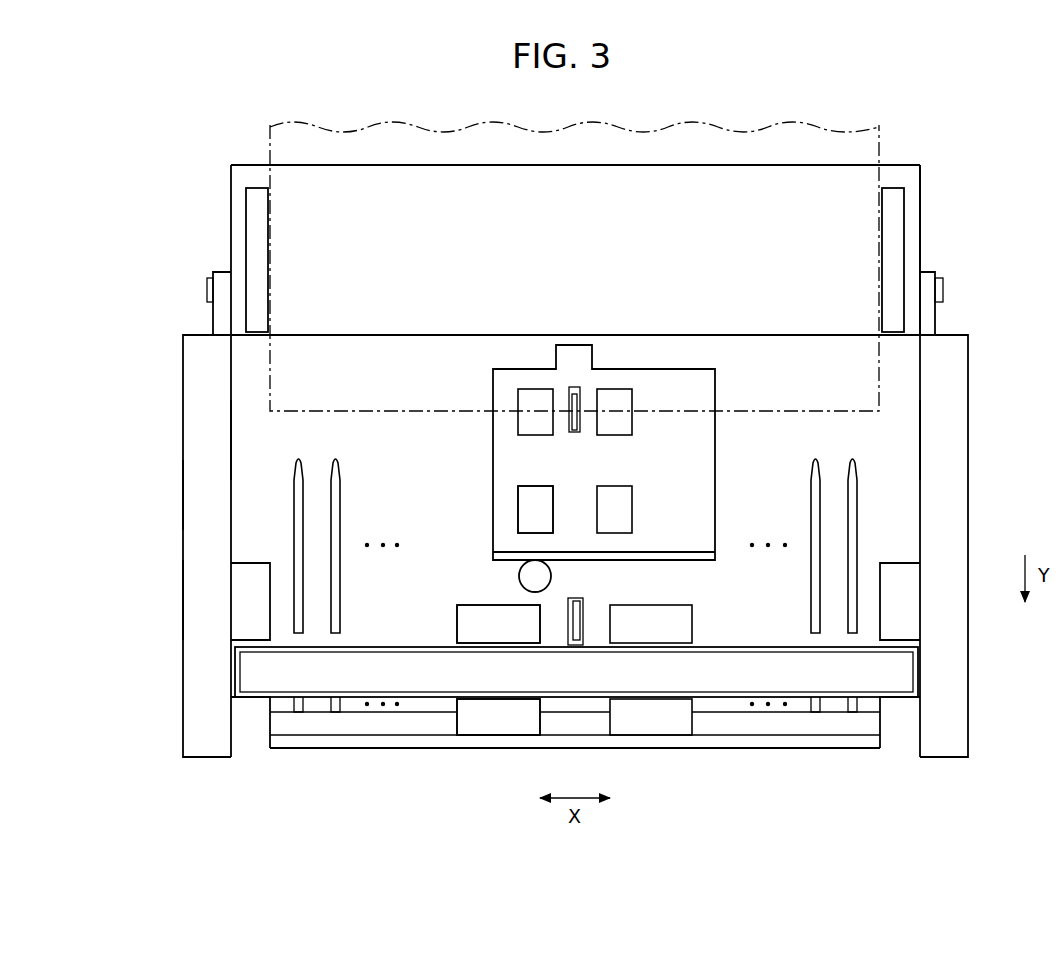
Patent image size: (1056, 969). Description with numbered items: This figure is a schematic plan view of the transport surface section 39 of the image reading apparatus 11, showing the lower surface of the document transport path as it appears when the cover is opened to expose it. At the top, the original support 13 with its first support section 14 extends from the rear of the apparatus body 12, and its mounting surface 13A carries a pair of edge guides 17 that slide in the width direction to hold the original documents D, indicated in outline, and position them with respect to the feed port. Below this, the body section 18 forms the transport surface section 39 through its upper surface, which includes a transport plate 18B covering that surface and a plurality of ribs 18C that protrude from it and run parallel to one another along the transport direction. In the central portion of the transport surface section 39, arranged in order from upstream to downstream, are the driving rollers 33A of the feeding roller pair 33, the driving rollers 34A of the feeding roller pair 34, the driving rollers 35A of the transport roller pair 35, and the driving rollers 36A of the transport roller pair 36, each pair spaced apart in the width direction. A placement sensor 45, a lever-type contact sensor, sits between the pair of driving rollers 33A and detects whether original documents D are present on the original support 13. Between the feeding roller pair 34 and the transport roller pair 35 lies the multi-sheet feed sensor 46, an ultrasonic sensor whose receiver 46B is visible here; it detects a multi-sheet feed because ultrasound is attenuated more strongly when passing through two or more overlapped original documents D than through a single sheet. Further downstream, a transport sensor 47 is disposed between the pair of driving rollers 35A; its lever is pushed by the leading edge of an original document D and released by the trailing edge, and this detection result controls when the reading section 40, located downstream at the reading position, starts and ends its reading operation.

The image reading apparatus 11 is at (182, 348).
The apparatus body 12 is at (182, 598).
The original support 13 is at (229, 180).
The mounting surface 13A is at (575, 188).
The first support section 14 is at (921, 183).
The edge guides 17 is at (246, 226).
The body section 18 is at (182, 497).
The transport plate 18B is at (268, 437).
The ribs 18C is at (302, 490).
The feeding roller pair 33 is at (515, 391).
The driving rollers 33A is at (527, 422).
The feeding roller pair 34 is at (515, 488).
The driving rollers 34A is at (530, 512).
The transport roller pair 35 is at (456, 605).
The driving rollers 35A is at (465, 622).
The transport roller pair 36 is at (462, 741).
The driving rollers 36A is at (502, 728).
The transport surface section 39 is at (894, 439).
The reading section 40 is at (786, 646).
The placement sensor 45 is at (573, 386).
The multi-sheet feed sensor 46 is at (488, 576).
The receiver 46B is at (518, 577).
The transport sensor 47 is at (580, 597).
The original documents D is at (879, 130).